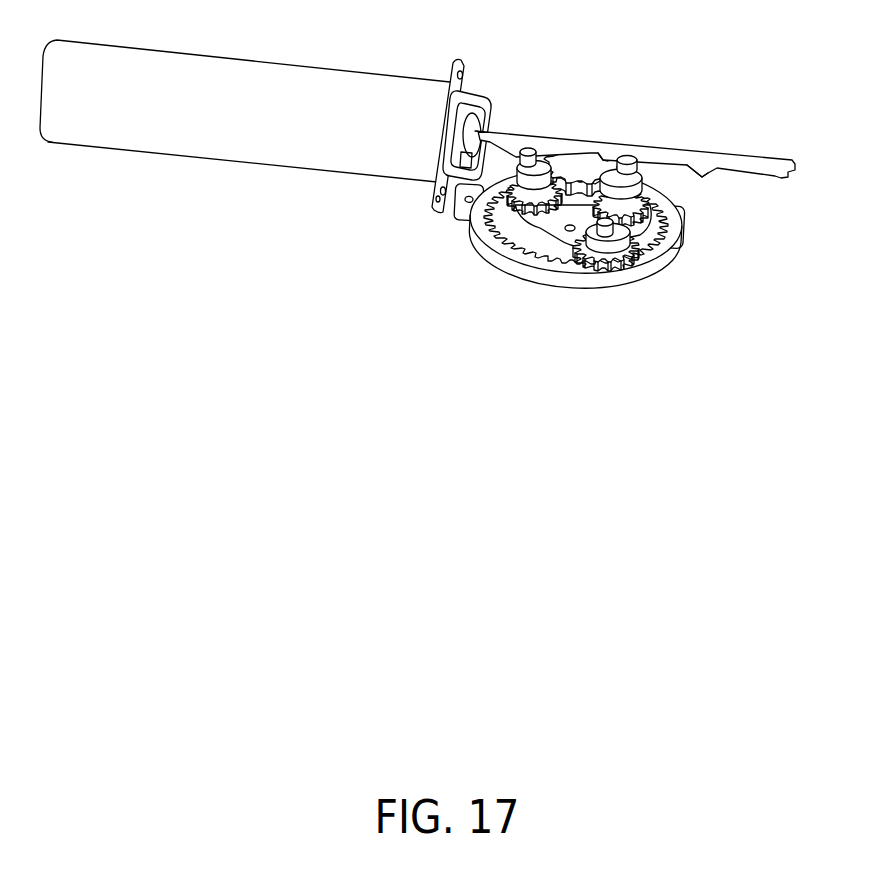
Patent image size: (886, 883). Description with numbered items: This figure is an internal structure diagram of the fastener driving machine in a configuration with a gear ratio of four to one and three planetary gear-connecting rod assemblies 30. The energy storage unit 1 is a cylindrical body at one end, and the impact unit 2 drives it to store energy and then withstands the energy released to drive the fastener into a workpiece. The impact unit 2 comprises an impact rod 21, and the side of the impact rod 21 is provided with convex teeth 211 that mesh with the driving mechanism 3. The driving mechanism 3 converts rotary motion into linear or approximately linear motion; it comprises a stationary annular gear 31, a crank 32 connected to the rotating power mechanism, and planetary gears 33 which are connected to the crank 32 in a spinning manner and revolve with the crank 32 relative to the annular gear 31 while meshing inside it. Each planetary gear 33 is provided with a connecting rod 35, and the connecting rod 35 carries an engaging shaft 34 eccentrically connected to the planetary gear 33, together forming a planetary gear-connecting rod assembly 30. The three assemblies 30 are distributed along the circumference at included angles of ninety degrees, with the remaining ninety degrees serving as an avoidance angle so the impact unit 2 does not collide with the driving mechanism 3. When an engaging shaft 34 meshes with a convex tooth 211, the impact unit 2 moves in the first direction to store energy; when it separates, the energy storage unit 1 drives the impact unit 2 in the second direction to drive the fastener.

The energy storage unit 1 is at (373, 70).
The impact unit 2 is at (635, 151).
The impact rod 21 is at (709, 158).
The convex tooth 211 is at (608, 156).
The driving mechanism 3 is at (569, 220).
The planetary gear-connecting rod assembly 30 is at (598, 185).
The annular gear 31 is at (556, 274).
The crank 32 is at (520, 249).
The planetary gear 33 is at (586, 156).
The engaging shaft 34 is at (529, 146).
The connecting rod 35 is at (543, 167).